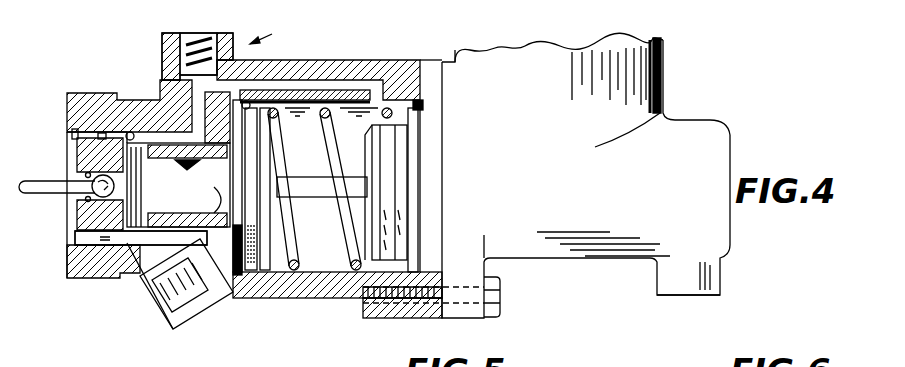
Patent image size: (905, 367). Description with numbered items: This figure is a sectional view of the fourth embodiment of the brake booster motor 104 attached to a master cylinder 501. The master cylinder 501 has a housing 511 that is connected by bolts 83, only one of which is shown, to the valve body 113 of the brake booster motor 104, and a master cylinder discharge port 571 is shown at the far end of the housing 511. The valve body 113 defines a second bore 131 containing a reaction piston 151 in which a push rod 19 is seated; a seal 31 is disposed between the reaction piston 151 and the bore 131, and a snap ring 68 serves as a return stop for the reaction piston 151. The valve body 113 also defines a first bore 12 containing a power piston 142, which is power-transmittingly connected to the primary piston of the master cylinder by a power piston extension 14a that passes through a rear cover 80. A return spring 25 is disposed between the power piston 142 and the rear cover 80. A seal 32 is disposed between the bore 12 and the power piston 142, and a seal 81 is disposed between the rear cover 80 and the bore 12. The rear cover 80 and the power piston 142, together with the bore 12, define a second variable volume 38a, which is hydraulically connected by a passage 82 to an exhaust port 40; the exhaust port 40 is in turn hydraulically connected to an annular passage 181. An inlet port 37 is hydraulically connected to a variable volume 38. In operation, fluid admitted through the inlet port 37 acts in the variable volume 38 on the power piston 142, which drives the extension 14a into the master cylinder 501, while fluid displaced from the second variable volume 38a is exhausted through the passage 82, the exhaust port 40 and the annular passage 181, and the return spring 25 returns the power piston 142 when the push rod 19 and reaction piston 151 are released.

The seal 31 is at (78, 293).
The second bore 131 is at (128, 135).
The exhaust port 40 is at (198, 100).
The snap ring 68 is at (70, 133).
The push rod 19 is at (60, 195).
The reaction piston 151 is at (88, 224).
The annular passage 181 is at (143, 240).
The inlet port 37 is at (200, 323).
The power piston 142 is at (240, 282).
The seal 32 is at (256, 278).
The first bore 12 is at (318, 273).
The valve body 113 is at (335, 298).
The variable volume 38 is at (220, 185).
The return spring 25 is at (325, 130).
The power piston extension 14a is at (298, 162).
The second variable volume 38a is at (320, 240).
The brake booster motor 104 is at (281, 34).
The passage 82 is at (315, 85).
The seal 81 is at (420, 100).
The rear cover 80 is at (430, 58).
The master cylinder 501 is at (670, 87).
The housing 511 is at (628, 168).
The bolts 83 is at (500, 298).
The discharge port 571 is at (686, 295).